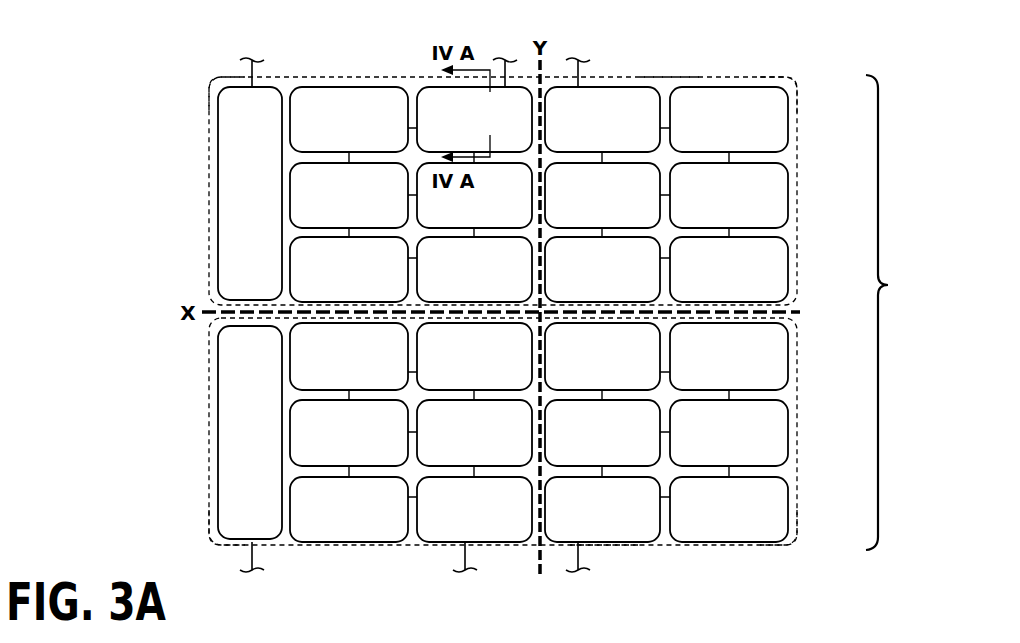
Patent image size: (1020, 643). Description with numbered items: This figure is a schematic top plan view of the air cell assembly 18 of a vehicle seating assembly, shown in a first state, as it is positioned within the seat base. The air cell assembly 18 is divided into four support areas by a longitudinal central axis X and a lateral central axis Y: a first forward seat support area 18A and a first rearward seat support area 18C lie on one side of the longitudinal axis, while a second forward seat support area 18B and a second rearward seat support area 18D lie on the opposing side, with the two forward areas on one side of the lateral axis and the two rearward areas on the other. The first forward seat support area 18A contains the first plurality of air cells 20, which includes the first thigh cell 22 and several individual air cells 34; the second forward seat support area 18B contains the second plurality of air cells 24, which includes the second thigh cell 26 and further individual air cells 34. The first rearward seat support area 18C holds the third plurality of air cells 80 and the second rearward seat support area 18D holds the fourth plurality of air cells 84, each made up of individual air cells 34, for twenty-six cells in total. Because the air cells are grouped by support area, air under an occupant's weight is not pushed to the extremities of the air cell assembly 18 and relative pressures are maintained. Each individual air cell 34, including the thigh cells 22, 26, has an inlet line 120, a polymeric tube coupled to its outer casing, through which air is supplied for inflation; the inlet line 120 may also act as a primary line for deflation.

The air cell assembly 18 is at (888, 285).
The first forward seat support area 18A is at (217, 77).
The second forward seat support area 18B is at (210, 535).
The first rearward seat support area 18C is at (750, 550).
The second rearward seat support area 18D is at (735, 75).
The first plurality of air cells 20 is at (393, 65).
The first thigh cell 22 is at (240, 170).
The second plurality of air cells 24 is at (330, 552).
The second thigh cell 26 is at (242, 470).
The individual air cells 34 is at (372, 178).
The third plurality of air cells 80 is at (665, 67).
The fourth plurality of air cells 84 is at (602, 553).
The inlet line 120 is at (256, 73).